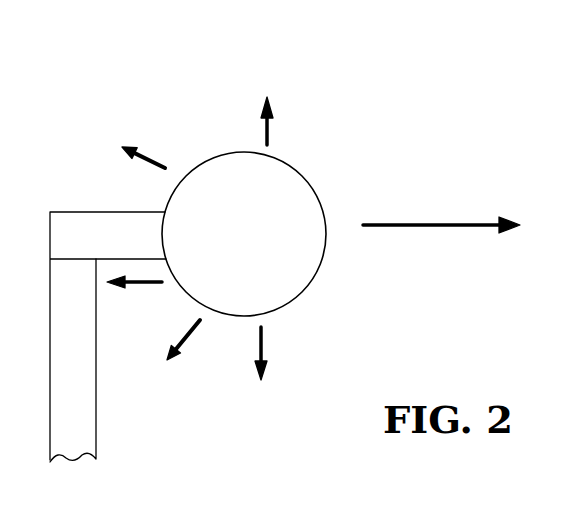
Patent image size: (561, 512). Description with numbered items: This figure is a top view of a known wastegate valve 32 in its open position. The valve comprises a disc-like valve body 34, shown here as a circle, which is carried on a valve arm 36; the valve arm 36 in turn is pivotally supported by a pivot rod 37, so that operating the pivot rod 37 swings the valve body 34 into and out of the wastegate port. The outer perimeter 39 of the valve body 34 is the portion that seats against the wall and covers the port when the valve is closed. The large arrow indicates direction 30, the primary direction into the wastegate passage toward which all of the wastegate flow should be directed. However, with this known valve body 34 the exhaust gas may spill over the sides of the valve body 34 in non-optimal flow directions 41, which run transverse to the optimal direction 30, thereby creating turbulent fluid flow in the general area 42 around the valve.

The direction 30 is at (417, 225).
The wastegate valve 32 is at (128, 117).
The valve body 34 is at (233, 178).
The valve arm 36 is at (122, 227).
The pivot rod 37 is at (78, 412).
The outer perimeter 39 is at (317, 336).
The non-optimal flow directions 41 is at (268, 132).
The general area 42 is at (199, 98).